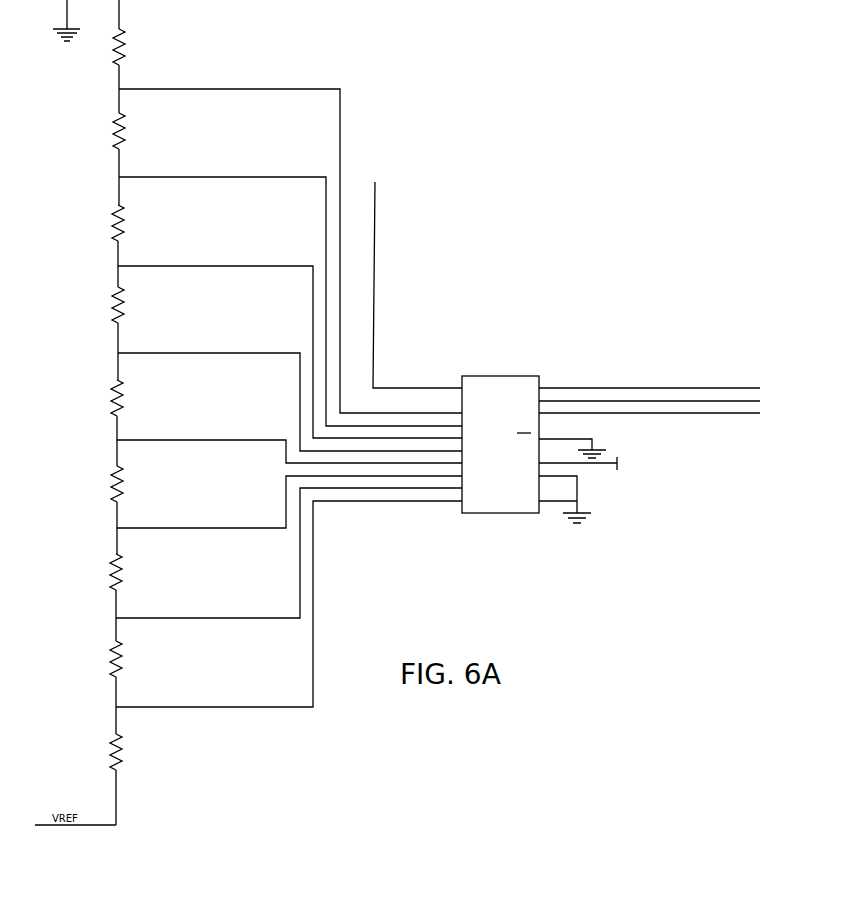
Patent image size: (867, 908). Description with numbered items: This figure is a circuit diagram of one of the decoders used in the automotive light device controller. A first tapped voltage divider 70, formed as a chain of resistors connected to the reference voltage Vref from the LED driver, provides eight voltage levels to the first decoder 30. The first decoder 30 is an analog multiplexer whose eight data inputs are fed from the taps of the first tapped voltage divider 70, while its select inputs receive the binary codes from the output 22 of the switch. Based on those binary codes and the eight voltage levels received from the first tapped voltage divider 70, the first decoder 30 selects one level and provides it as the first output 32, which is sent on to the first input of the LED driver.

The first tapped voltage divider 70 is at (228, 62).
The first output 32 is at (417, 281).
The first decoder 30 is at (504, 347).
The output 22 is at (774, 385).